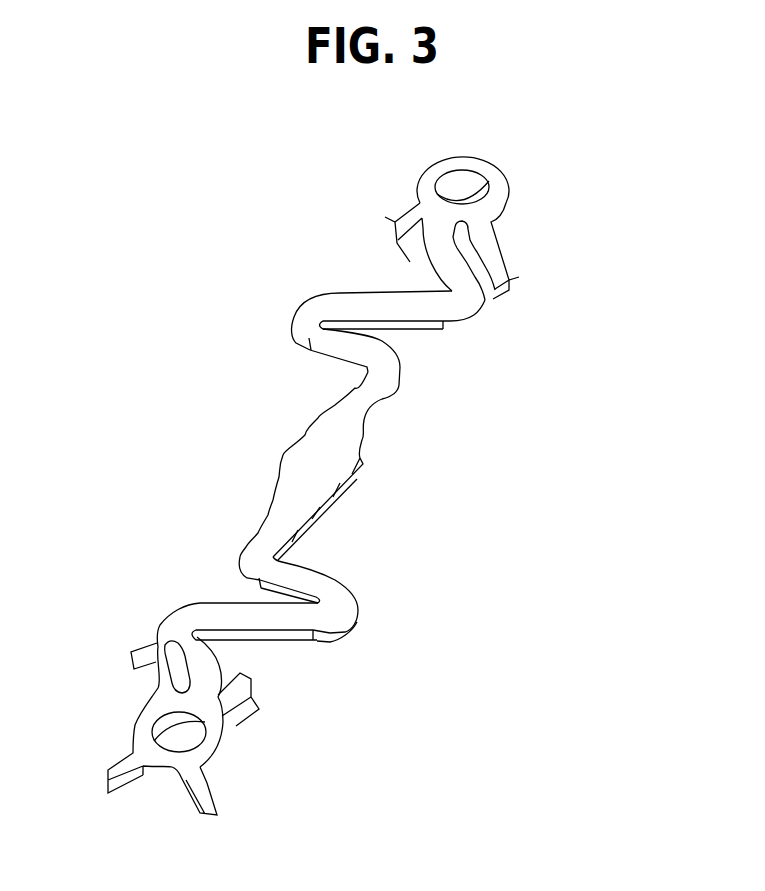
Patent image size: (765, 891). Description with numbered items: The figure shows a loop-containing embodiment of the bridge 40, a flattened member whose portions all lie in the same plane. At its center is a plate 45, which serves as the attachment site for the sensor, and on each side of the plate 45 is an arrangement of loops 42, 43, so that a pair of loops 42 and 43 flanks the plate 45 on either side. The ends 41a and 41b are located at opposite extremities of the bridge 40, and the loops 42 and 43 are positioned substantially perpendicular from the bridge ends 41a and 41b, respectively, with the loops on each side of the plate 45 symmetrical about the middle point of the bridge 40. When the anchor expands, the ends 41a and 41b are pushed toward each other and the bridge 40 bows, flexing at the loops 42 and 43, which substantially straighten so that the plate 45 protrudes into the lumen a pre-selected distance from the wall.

The bridge 40 is at (343, 543).
The bridge end 41a is at (440, 208).
The bridge end 41b is at (200, 703).
The loop 42 is at (307, 326).
The loop 43 is at (464, 282).
The plate 45 is at (327, 440).